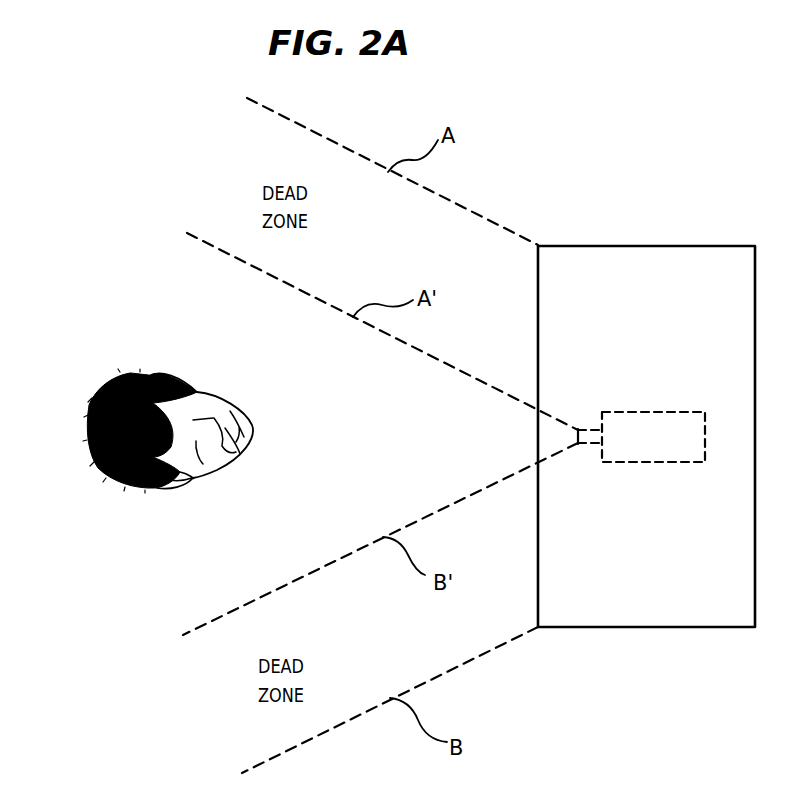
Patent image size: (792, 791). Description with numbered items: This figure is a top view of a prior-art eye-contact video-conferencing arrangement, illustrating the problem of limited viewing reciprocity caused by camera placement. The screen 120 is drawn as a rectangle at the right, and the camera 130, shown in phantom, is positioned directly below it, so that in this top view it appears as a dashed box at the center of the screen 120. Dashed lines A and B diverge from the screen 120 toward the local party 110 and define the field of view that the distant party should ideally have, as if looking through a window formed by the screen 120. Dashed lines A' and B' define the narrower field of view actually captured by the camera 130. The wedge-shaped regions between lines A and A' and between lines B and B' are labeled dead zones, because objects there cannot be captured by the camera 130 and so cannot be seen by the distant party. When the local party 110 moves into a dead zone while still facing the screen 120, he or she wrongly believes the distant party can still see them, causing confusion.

The local party 110 is at (132, 372).
The screen 120 is at (652, 246).
The camera 130 is at (665, 412).